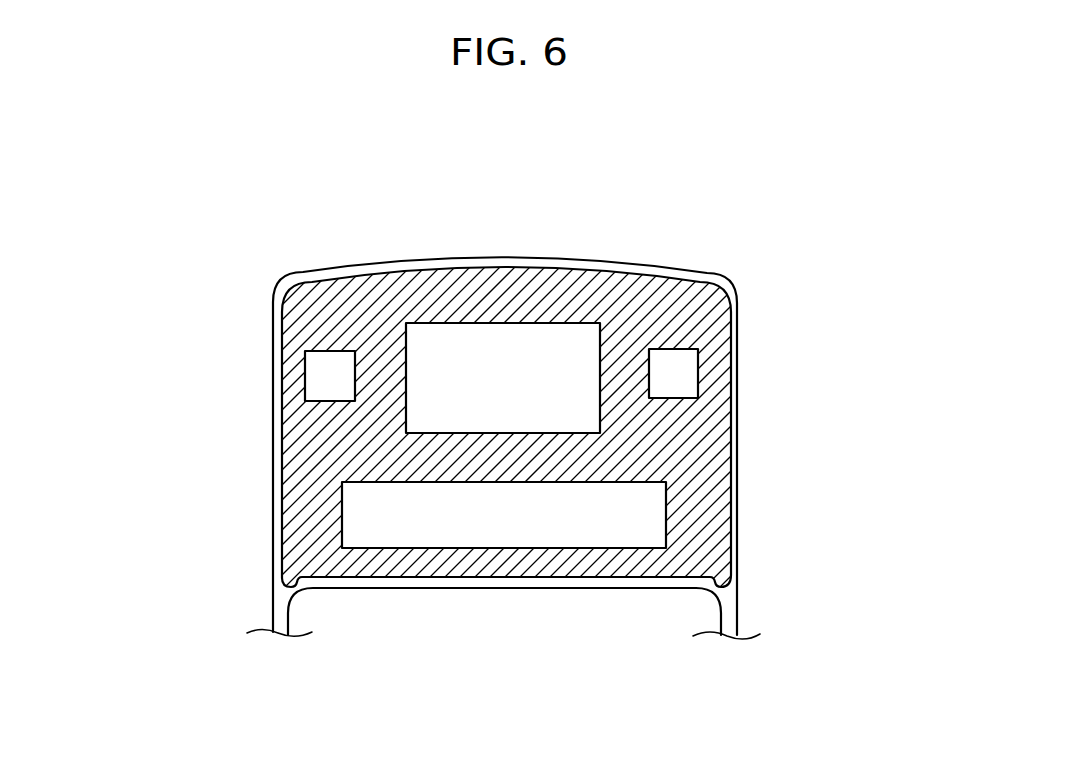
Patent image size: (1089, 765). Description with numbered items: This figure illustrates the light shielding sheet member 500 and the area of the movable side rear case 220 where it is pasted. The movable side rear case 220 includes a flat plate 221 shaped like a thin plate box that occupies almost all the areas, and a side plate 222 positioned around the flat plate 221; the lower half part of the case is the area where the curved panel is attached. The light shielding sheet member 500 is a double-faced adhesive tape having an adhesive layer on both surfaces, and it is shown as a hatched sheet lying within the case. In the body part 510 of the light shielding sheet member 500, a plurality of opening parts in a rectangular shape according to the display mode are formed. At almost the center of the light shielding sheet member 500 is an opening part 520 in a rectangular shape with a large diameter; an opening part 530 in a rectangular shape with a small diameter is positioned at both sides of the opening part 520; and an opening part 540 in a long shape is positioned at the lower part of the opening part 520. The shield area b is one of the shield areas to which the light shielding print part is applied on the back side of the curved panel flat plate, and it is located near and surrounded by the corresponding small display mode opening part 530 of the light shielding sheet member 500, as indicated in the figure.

The movable side rear case 220 is at (681, 262).
The flat plate 221 is at (278, 458).
The side plate 222 is at (690, 617).
The light shielding sheet member 500 is at (698, 313).
The body part 510 is at (700, 474).
The opening part 520 is at (487, 321).
The opening part 530 is at (522, 291).
The opening part 540 is at (497, 545).
The shield area b is at (331, 348).